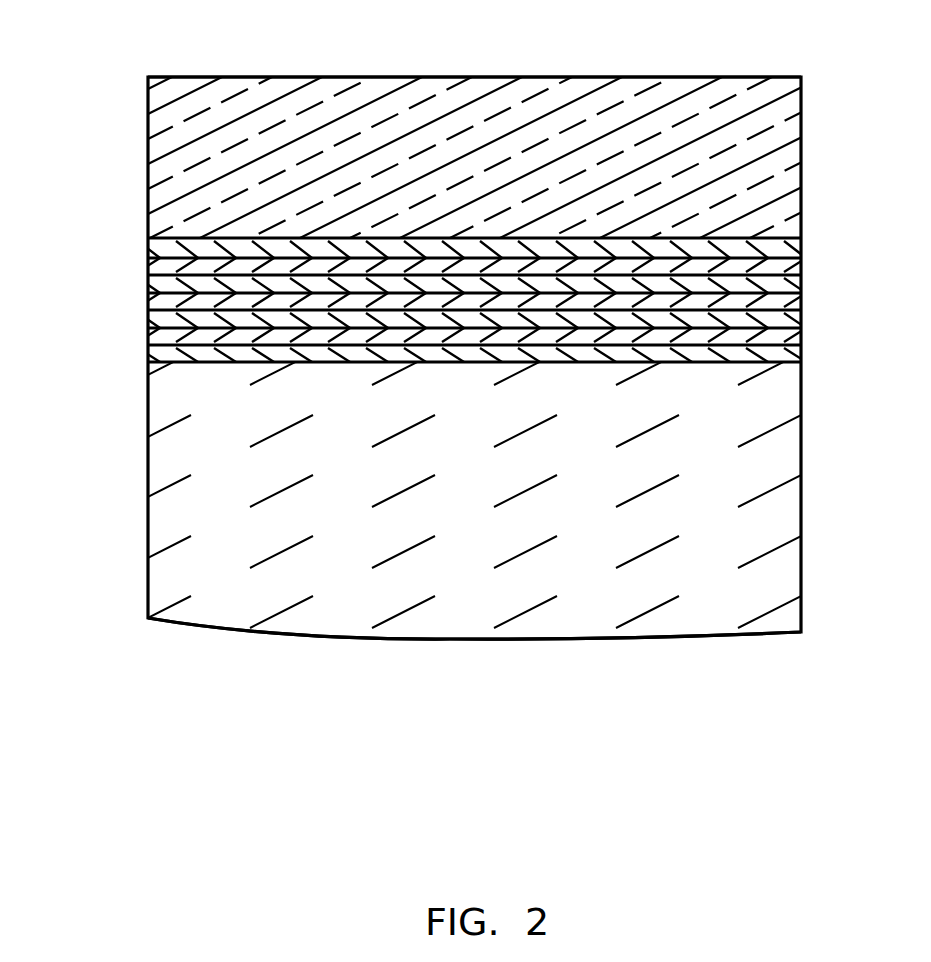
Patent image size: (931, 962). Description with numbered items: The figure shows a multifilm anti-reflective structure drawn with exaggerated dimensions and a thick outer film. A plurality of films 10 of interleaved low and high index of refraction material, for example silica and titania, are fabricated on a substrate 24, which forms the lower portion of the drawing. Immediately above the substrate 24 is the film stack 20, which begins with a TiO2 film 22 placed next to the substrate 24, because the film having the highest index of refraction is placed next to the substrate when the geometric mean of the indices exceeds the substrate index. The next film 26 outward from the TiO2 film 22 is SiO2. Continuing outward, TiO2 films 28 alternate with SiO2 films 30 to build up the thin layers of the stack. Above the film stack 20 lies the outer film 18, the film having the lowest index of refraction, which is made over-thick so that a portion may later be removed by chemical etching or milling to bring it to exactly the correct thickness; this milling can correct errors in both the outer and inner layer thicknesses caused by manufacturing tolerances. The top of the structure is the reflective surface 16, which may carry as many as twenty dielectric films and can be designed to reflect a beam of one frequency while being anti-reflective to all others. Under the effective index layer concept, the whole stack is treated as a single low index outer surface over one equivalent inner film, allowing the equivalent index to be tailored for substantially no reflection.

The films 10 is at (72, 307).
The reflective surface 16 is at (704, 74).
The outer film 18 is at (781, 135).
The film stack 20 is at (810, 236).
The TiO2 film 22 is at (147, 354).
The substrate 24 is at (782, 466).
The SiO2 film 26 is at (147, 337).
The TiO2 films 28 is at (147, 250).
The SiO2 films 30 is at (147, 268).